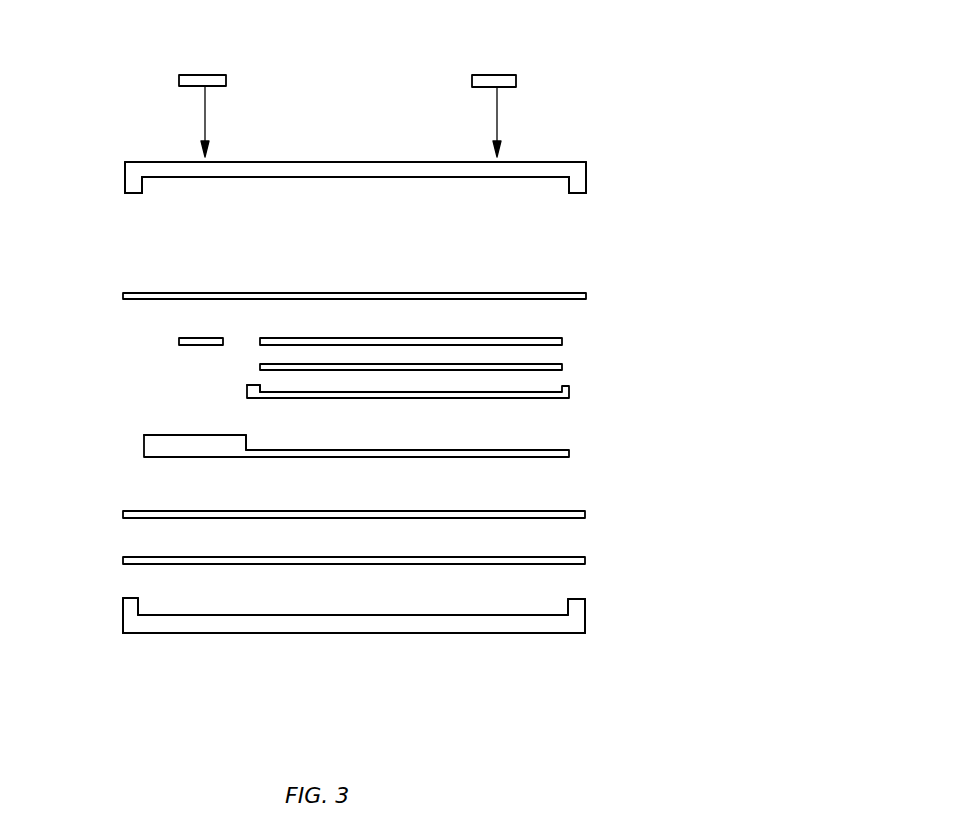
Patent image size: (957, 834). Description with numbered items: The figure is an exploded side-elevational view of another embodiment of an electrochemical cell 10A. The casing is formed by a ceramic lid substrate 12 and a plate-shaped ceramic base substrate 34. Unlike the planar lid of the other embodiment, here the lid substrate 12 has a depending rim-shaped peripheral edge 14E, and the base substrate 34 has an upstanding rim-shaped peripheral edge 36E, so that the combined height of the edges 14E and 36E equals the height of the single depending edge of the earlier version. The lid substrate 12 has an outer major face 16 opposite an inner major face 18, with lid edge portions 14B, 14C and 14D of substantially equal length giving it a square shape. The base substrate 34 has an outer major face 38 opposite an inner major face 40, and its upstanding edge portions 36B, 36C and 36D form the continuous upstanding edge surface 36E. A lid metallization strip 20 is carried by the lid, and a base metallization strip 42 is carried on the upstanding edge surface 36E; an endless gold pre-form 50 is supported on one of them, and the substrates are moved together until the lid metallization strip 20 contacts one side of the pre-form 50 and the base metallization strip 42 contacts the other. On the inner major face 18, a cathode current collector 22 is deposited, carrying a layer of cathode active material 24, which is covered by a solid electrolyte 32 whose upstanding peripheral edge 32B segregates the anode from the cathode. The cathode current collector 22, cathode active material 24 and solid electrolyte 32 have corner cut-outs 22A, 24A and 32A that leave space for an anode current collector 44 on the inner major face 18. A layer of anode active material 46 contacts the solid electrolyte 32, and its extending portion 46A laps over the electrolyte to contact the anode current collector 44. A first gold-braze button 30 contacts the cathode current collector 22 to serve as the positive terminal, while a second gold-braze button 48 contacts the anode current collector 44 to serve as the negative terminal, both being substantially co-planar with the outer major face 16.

The electrochemical cell 10A is at (665, 95).
The lid substrate 12 is at (599, 168).
The lid second edge portion 14B is at (400, 180).
The lid third edge portion 14C is at (588, 172).
The lid fourth edge portion 14D is at (124, 172).
The depending rim-shaped peripheral edge 14E is at (135, 205).
The outer major face 16 is at (355, 157).
The inner major face 18 is at (355, 207).
The lid metallization strip 20 is at (588, 296).
The cathode current collector 22 is at (564, 342).
The corner cut-out 22A is at (246, 335).
The cathode active material 24 is at (564, 368).
The corner cut-out 24A is at (239, 362).
The first gold-braze button 30 is at (497, 73).
The solid electrolyte 32 is at (570, 396).
The corner cut-out 32A is at (238, 410).
The upstanding peripheral edge 32B is at (246, 393).
The base substrate 34 is at (693, 617).
The base second upstanding edge portion 36B is at (507, 634).
The base third upstanding edge portion 36C is at (587, 607).
The base fourth upstanding edge portion 36D is at (123, 607).
The upstanding edge surface 36E is at (586, 602).
The outer major face 38 is at (180, 652).
The inner major face 40 is at (347, 613).
The base metallization strip 42 is at (587, 560).
The anode current collector 44 is at (178, 341).
The anode active material 46 is at (570, 455).
The extending portion 46A is at (143, 448).
The second gold-braze button 48 is at (205, 73).
The gold pre-form 50 is at (122, 514).